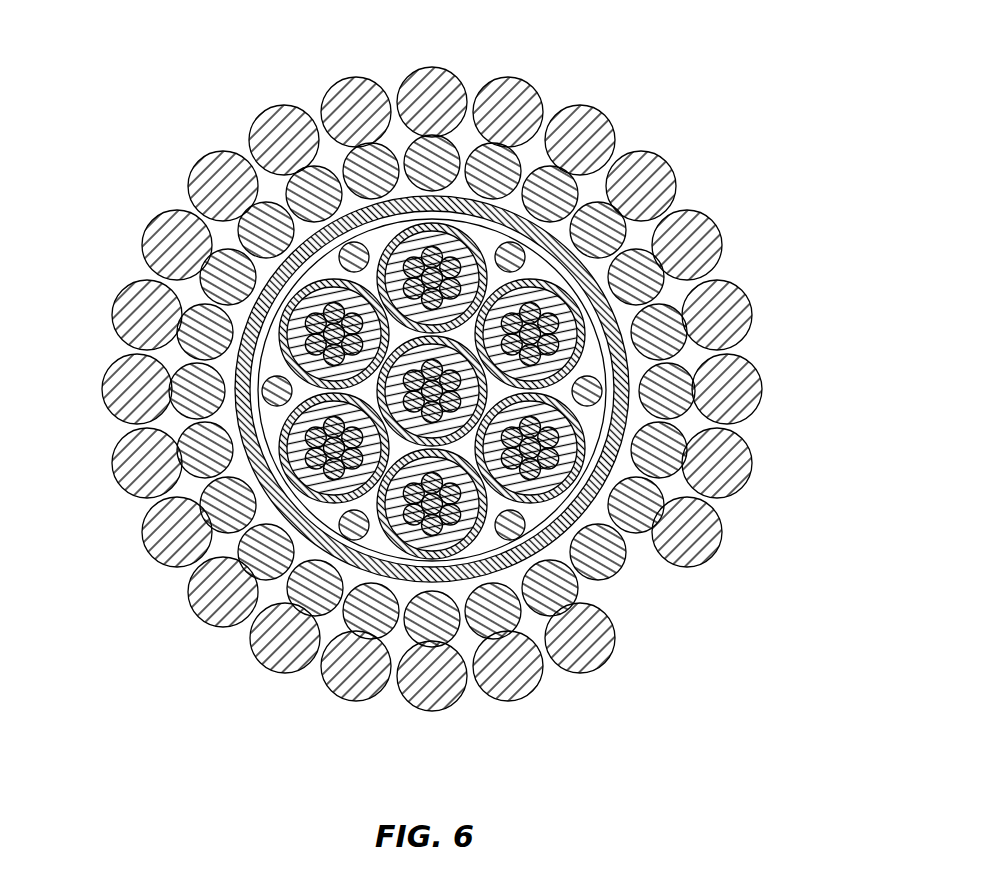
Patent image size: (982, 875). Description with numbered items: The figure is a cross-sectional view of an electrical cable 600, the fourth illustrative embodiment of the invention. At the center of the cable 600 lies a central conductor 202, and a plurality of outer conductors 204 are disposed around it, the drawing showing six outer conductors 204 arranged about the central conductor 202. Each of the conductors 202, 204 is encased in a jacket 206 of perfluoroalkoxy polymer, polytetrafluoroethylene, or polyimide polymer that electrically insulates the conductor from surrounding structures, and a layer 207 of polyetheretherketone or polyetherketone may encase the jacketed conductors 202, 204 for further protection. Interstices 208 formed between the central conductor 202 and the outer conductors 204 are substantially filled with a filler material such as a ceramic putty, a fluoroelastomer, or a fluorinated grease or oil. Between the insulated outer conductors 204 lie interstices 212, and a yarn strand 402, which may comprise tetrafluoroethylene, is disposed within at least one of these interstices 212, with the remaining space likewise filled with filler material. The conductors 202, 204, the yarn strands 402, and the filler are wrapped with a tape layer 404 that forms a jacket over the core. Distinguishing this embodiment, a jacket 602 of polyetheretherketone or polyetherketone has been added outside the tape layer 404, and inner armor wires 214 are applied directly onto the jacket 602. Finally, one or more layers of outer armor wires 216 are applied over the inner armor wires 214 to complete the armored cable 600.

The electrical cable 600 is at (683, 75).
The central conductor 202 is at (660, 307).
The outer conductors 204 is at (690, 535).
The jacket 206 is at (497, 223).
The layer 207 is at (365, 213).
The interstices 208 is at (585, 578).
The interstices 212 is at (655, 161).
The inner armor wire 214 is at (203, 290).
The outer armor wire 216 is at (200, 193).
The yarn strand 402 is at (753, 457).
The tape layer 404 is at (212, 612).
The jacket 602 is at (157, 555).